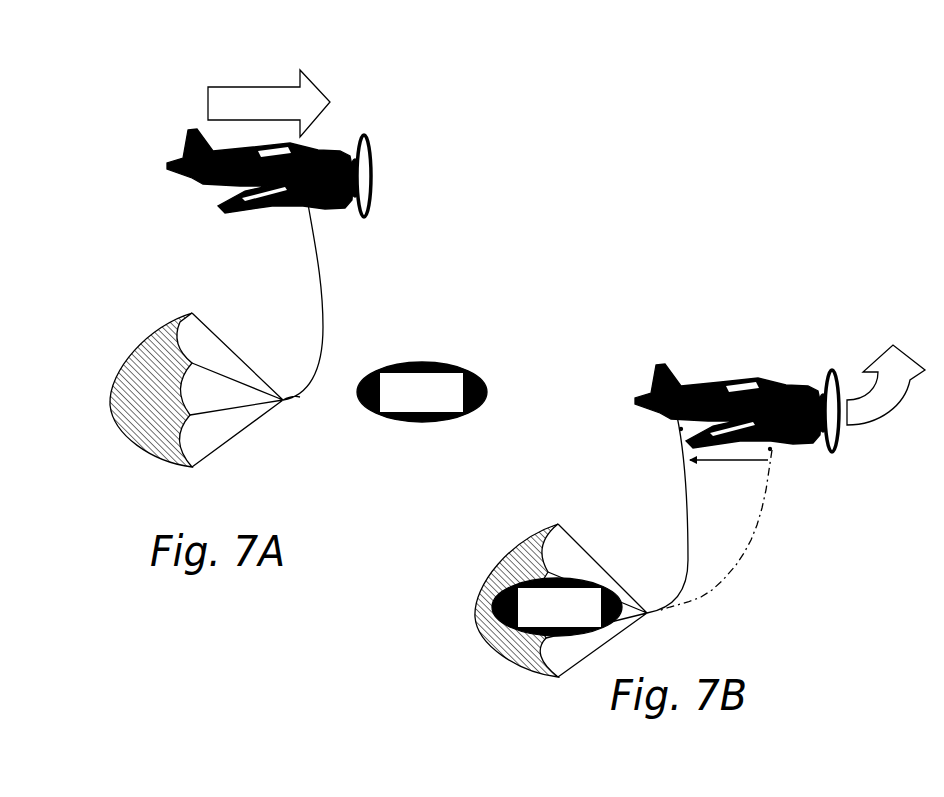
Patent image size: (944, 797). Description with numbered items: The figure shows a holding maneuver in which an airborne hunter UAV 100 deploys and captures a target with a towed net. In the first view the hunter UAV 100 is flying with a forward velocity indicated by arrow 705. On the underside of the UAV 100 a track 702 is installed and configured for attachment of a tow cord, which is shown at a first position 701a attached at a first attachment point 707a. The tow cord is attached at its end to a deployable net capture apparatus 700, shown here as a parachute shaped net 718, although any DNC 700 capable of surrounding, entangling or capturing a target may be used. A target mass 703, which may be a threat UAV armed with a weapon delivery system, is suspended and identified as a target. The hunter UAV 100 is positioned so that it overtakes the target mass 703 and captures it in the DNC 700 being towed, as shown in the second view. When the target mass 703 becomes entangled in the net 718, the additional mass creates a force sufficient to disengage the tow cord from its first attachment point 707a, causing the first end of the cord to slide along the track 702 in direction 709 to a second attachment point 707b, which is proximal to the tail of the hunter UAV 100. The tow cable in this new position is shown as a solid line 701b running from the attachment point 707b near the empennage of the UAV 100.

In FIG. 7A, the hunter UAV 100 is at (136, 107).
In FIG. 7B, the hunter UAV 100 is at (730, 323).
In FIG. 7A, the deployable net capture apparatus 700 is at (95, 291).
In FIG. 7A, the tow cord at first position 701a is at (323, 291).
In FIG. 7B, the tow cord at first position 701a is at (744, 552).
In FIG. 7B, the tow cable 701b is at (687, 524).
In FIG. 7A, the track 702 is at (205, 176).
In FIG. 7B, the track 702 is at (681, 429).
In FIG. 7A, the target mass 703 is at (427, 422).
In FIG. 7B, the target mass 703 is at (567, 637).
In FIG. 7A, the arrow 705 is at (258, 86).
In FIG. 7A, the first attachment point 707a is at (307, 203).
In FIG. 7B, the second attachment point 707b is at (676, 417).
In FIG. 7B, the direction 709 is at (727, 461).
In FIG. 7A, the parachute shaped net 718 is at (150, 426).
In FIG. 7B, the parachute shaped net 718 is at (500, 636).